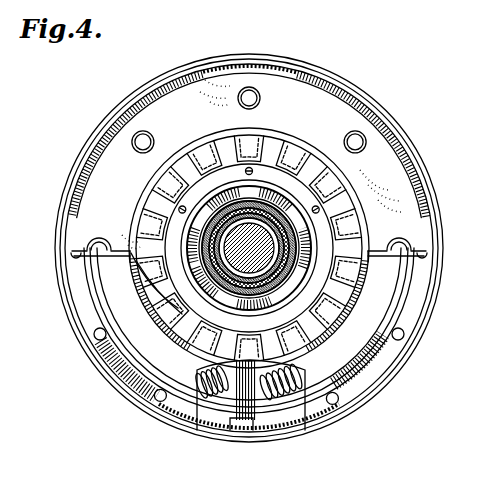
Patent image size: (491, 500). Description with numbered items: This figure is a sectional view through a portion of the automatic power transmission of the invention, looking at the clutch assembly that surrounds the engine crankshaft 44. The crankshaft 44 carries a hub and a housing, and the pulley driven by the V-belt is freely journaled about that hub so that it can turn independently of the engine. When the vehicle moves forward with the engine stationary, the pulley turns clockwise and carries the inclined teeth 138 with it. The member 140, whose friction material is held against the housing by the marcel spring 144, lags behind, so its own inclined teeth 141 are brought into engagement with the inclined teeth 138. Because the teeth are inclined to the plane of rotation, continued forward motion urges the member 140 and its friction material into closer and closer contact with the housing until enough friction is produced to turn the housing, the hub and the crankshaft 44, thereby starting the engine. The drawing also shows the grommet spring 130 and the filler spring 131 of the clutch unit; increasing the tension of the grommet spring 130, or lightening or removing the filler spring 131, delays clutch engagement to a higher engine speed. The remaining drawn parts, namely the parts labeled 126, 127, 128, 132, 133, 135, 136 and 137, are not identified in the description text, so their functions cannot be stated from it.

The crankshaft 44 is at (305, 246).
The housing 126 is at (118, 108).
The cover plate 127 is at (325, 413).
The screw holes 128 is at (166, 402).
The grommet spring 130 is at (207, 400).
The filler spring 131 is at (297, 408).
The friction ring 132 is at (322, 88).
The flange 133 is at (218, 88).
The stator pole 135 is at (309, 167).
The pole lamination 136 is at (284, 150).
The stator ring 137 is at (176, 228).
The inclined teeth 138 is at (215, 185).
The member 140 is at (288, 303).
The inclined teeth 141 is at (305, 268).
The marcel spring 144 is at (203, 322).